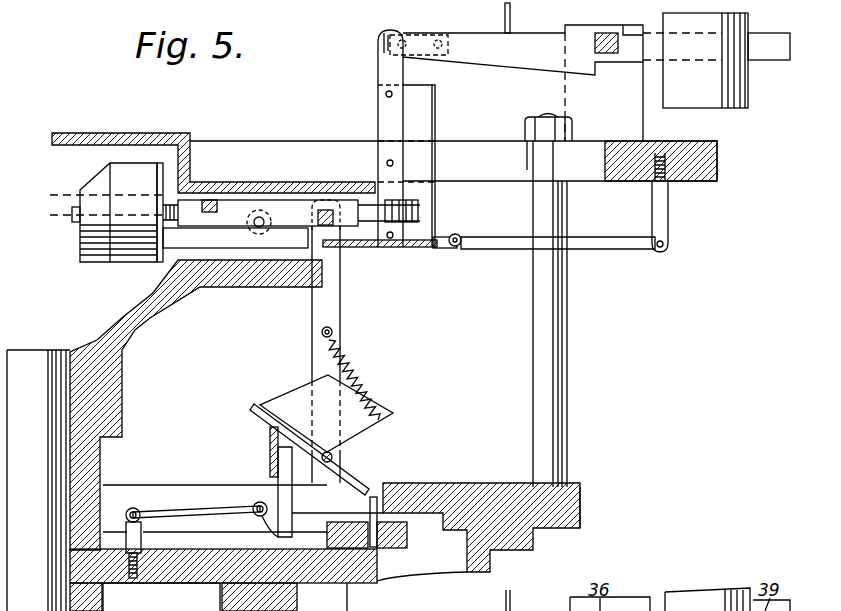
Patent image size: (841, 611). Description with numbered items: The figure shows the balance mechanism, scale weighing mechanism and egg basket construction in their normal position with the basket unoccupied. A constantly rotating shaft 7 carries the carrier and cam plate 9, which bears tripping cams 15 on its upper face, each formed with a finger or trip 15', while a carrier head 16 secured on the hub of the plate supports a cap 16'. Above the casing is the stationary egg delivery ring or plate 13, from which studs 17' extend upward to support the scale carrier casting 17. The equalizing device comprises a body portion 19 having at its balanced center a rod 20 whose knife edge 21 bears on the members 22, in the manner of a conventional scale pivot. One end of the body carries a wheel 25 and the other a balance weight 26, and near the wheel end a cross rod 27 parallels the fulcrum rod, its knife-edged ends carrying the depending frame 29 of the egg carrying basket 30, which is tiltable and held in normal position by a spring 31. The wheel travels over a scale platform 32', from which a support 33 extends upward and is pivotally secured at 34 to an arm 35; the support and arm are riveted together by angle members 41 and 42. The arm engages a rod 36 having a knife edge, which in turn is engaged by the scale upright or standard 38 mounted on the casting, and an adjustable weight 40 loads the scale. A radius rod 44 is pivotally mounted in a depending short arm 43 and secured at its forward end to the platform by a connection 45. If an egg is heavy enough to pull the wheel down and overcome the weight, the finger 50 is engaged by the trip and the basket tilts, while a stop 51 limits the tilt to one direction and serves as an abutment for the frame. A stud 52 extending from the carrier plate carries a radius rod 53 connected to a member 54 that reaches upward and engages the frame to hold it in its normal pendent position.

The shaft 7 is at (38, 480).
The carrier and cam plate 9 is at (167, 574).
The egg delivery ring or plate 13 is at (583, 511).
The tripping cam 15 is at (397, 551).
The finger or trip 15' is at (481, 514).
The carrier head 16 is at (226, 435).
The cap 16' is at (213, 150).
The scale carrier casting 17 is at (472, 168).
The studs 17' is at (569, 314).
The body portion 19 is at (259, 207).
The rod 20 is at (209, 200).
The knife edge 21 is at (210, 214).
The members 22 is at (291, 248).
The wheel 25 is at (418, 210).
The balance weight 26 is at (98, 252).
The cross rod 27 is at (328, 226).
The depending frame 29 is at (332, 308).
The egg carrying basket 30 is at (326, 413).
The spring 31 is at (362, 377).
The scale platform 32' is at (380, 270).
The support 33 is at (386, 116).
The pivot 34 is at (400, 33).
The arm 35 is at (504, 58).
The rod 36 is at (610, 34).
The scale upright or standard 38 is at (574, 122).
The adjustable weight 40 is at (705, 98).
The angle member 41 is at (510, 26).
The angle member 42 is at (432, 125).
The depending short arm 43 is at (668, 228).
The radius rod 44 is at (598, 250).
The connection 45 is at (460, 250).
The finger 50 is at (346, 478).
The stop 51 is at (269, 440).
The stud 52 is at (141, 541).
The radius rod 53 is at (165, 509).
The member 54 is at (292, 505).